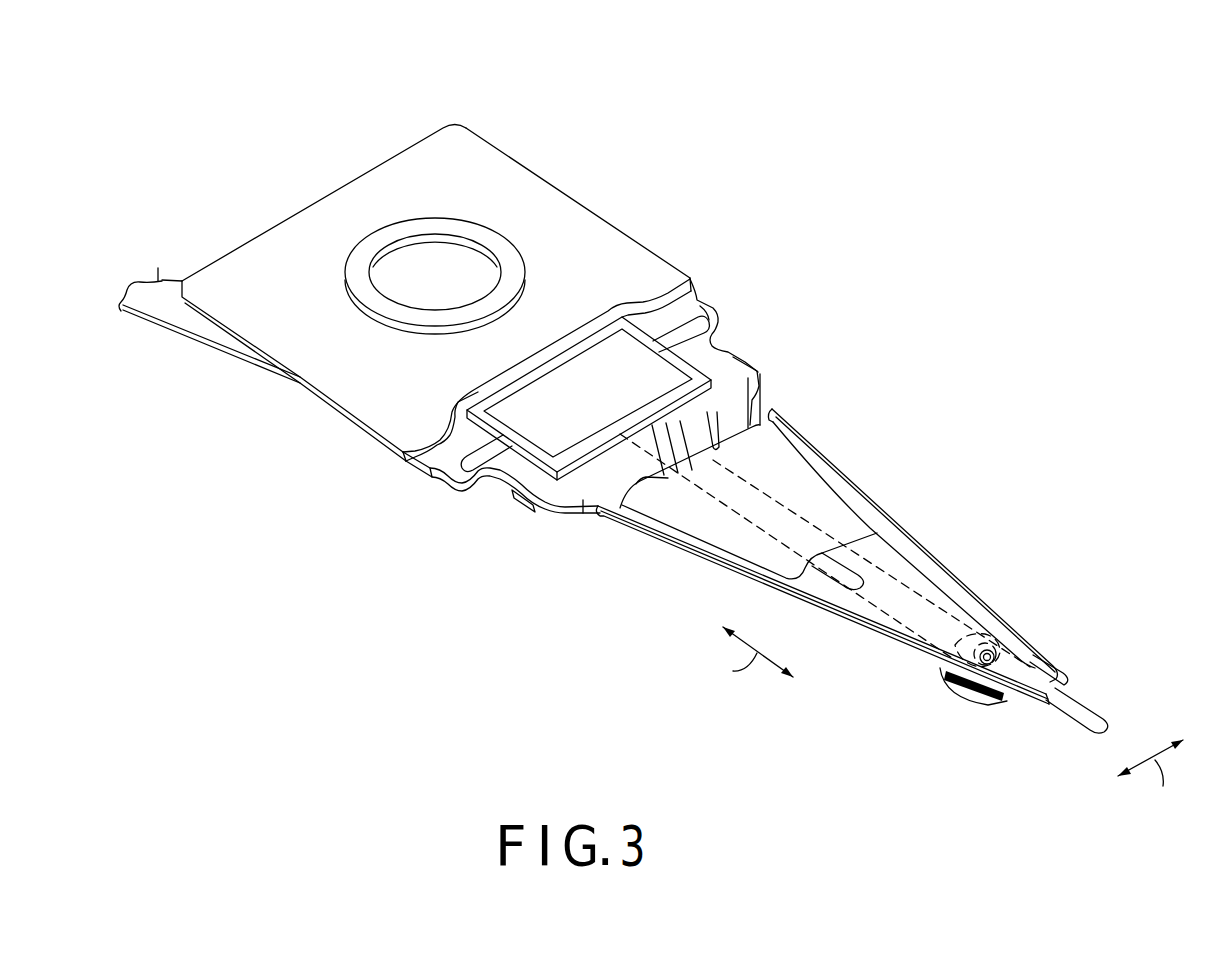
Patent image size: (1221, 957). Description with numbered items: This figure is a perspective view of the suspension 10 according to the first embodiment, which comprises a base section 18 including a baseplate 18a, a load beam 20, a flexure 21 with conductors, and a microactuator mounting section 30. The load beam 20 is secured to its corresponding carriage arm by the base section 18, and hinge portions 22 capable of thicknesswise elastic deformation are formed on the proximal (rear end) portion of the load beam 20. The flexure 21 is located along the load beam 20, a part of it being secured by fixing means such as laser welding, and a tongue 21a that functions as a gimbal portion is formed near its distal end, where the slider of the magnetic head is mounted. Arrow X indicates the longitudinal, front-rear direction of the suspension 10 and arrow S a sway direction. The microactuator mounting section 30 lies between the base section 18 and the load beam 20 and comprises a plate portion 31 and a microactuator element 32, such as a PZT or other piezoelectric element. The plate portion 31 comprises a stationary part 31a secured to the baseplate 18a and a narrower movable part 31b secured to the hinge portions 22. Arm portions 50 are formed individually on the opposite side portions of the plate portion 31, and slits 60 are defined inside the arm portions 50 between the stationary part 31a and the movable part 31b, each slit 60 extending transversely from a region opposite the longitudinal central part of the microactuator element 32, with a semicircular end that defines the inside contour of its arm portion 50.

The suspension 10 is at (790, 113).
The base section 18 is at (628, 226).
The baseplate 18a is at (553, 208).
The load beam 20 is at (900, 560).
The flexure 21 is at (880, 612).
The tongue 21a is at (1000, 652).
The hinge portions 22 is at (750, 402).
The microactuator mounting section 30 is at (750, 318).
The plate portion 31 is at (698, 305).
The stationary part 31a is at (410, 460).
The movable part 31b is at (556, 488).
The microactuator element 32 is at (570, 385).
The arm portions 50 is at (722, 326).
The slits 60 is at (712, 343).